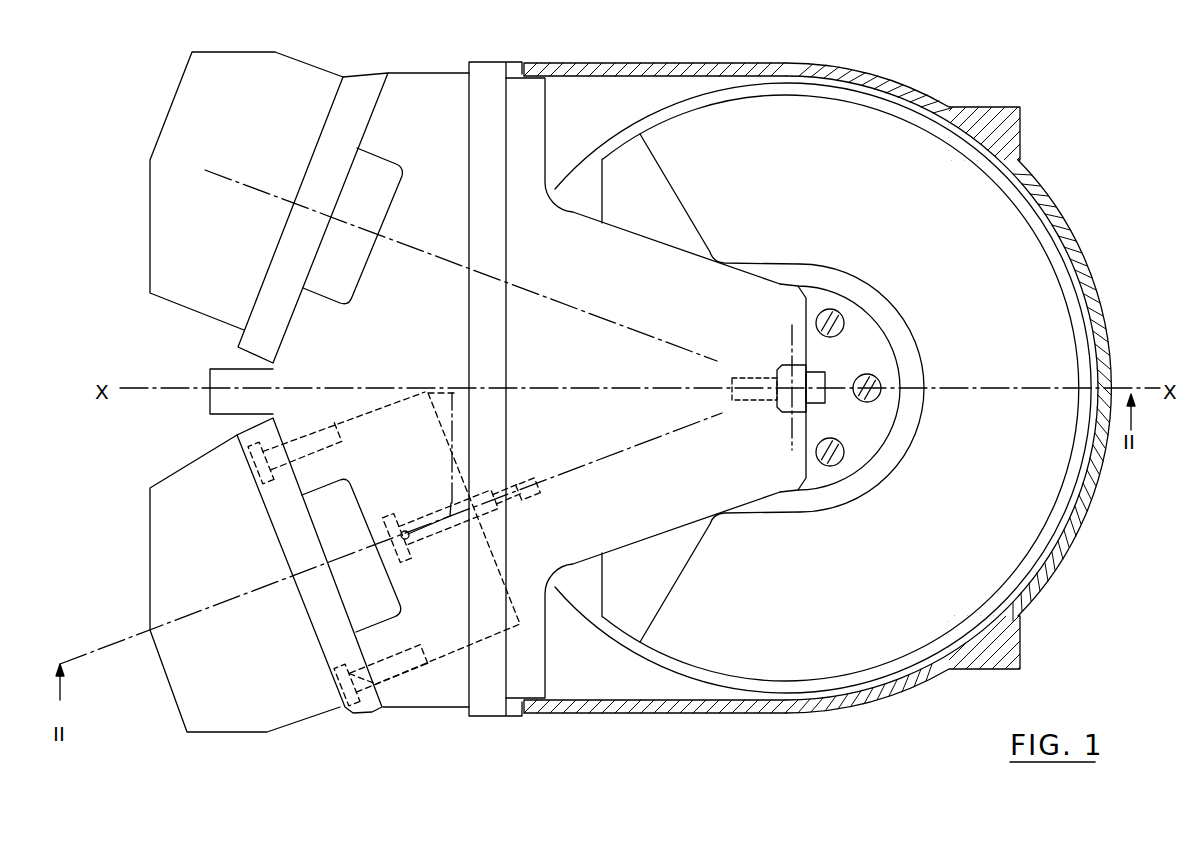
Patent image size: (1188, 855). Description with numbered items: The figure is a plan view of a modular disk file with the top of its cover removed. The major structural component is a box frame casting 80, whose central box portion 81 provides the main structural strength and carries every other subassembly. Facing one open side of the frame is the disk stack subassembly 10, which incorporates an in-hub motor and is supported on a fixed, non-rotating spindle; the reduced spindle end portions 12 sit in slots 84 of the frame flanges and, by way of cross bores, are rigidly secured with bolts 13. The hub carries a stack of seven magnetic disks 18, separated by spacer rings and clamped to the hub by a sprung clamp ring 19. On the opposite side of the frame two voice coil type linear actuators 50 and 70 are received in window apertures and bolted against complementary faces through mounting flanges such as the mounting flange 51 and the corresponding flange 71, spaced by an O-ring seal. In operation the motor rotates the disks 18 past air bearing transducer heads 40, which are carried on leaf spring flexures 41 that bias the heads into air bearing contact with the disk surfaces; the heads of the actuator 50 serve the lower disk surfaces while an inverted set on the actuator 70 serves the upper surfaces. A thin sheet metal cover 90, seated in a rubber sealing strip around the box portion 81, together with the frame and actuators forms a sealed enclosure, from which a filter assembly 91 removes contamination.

The disk stack subassembly 10 is at (643, 665).
The reduced spindle end portion 12 is at (778, 403).
The bolt 13 is at (827, 399).
The magnetic disk 18 is at (575, 612).
The sprung clamp ring 19 is at (893, 352).
The air bearing transducer head 40 is at (535, 496).
The leaf spring flexure 41 is at (450, 531).
The linear actuator 50 is at (222, 740).
The mounting flange 51 is at (353, 714).
The linear actuator 70 is at (168, 308).
The motor flange 71 is at (367, 72).
The box frame casting 80 is at (483, 717).
The central box portion 81 is at (417, 710).
The slot 84 is at (805, 368).
The cover 90 is at (800, 713).
The filter assembly 91 is at (663, 122).